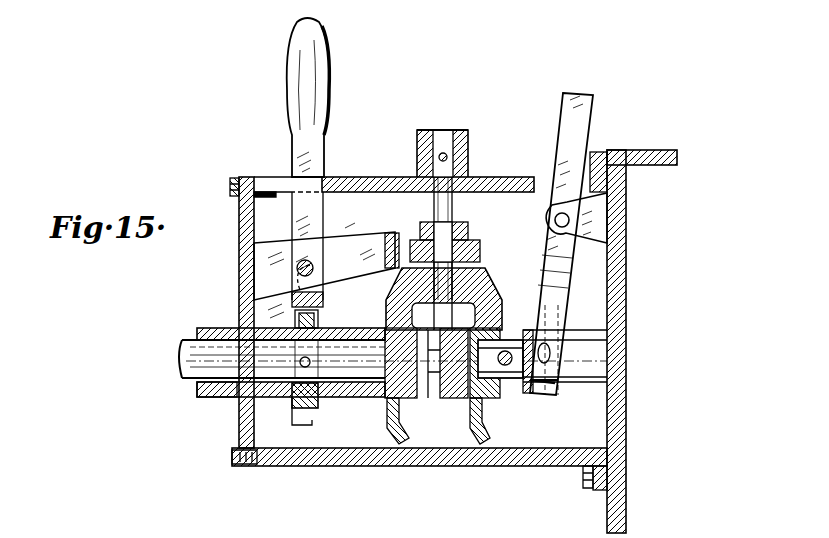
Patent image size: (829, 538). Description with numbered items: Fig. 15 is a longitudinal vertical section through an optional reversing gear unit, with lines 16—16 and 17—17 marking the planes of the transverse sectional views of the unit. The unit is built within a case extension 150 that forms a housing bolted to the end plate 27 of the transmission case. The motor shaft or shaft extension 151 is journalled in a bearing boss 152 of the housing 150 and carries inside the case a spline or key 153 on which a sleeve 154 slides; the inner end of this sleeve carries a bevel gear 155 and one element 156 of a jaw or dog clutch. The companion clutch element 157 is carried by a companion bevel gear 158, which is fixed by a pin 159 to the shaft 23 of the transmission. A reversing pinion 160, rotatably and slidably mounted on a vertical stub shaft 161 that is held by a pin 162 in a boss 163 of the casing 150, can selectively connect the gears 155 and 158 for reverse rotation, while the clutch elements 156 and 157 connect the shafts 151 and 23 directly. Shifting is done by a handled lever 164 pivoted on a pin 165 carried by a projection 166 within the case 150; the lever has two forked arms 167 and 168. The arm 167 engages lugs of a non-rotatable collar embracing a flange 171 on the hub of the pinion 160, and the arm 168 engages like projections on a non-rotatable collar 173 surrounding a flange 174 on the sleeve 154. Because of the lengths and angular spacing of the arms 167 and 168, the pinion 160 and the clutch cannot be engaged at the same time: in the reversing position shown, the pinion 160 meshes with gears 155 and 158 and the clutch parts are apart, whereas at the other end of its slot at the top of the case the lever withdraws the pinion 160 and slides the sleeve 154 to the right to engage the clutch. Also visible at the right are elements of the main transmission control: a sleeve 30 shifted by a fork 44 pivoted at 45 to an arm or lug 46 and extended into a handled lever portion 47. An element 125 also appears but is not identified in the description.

The section line 16— 16 is at (270, 18).
The section line 17— 17 is at (432, 85).
The shaft 23 is at (496, 322).
The end plate 27 is at (646, 150).
The sleeve 30 is at (568, 385).
The shifting fork 44 is at (566, 308).
The pivot 45 is at (569, 220).
The arm or lug 46 is at (595, 224).
The handled lever portion 47 is at (578, 118).
The bolt 125 is at (238, 180).
The case extension 150 is at (358, 180).
The shaft extension 151 is at (196, 346).
The bearing boss 152 is at (212, 400).
The spline or key 153 is at (359, 340).
The sleeve 154 is at (350, 400).
The bevel gear 155 is at (398, 420).
The clutch element 156 is at (434, 320).
The companion clutch element 157 is at (462, 400).
The companion bevel gear 158 is at (500, 422).
The pin 159 is at (504, 354).
The reversing pinion 160 is at (477, 274).
The vertical stub shaft 161 is at (468, 188).
The pin 162 is at (468, 145).
The boss 163 is at (470, 133).
The handled lever 164 is at (290, 136).
The pin 165 is at (310, 266).
The projection 166 is at (247, 250).
The forked arm 167 is at (366, 236).
The forked arm portion 168 is at (322, 300).
The flange 171 is at (474, 242).
The non-rotatable collar 173 is at (291, 416).
The flange 174 is at (300, 425).